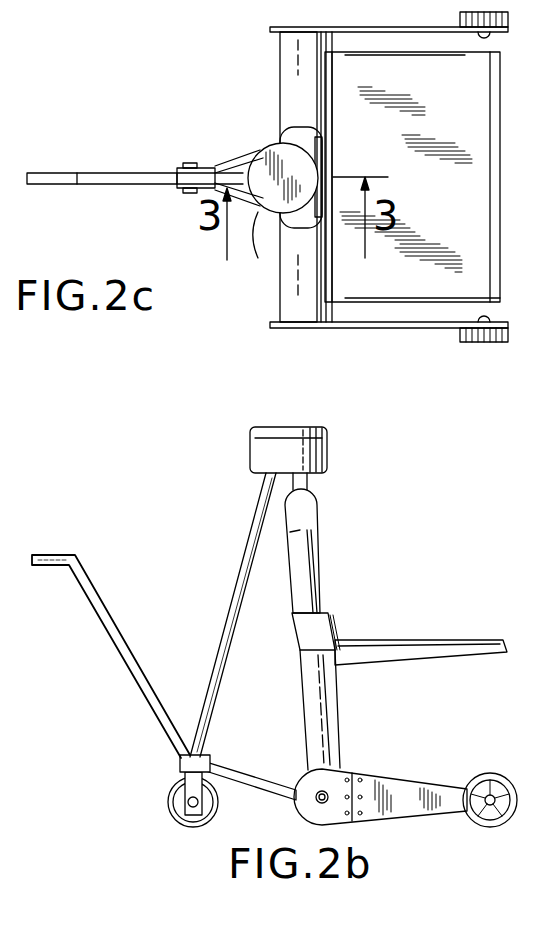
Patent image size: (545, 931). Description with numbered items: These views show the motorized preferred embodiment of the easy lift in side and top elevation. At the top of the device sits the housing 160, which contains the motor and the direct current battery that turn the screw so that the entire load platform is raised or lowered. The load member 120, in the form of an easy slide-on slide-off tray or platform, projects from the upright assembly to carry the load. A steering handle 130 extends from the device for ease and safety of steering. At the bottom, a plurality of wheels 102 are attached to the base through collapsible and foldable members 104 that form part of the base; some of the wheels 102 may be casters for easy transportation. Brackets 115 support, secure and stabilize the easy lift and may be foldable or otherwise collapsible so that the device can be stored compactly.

In FIG. 2C, the wheels 102 is at (470, 342).
In FIG. 2B, the wheels 102 is at (492, 777).
In FIG. 2C, the collapsible and foldable members 104 is at (310, 330).
In FIG. 2B, the collapsible and foldable members 104 is at (380, 770).
In FIG. 2B, the brackets 115 is at (240, 580).
In FIG. 2C, the load member 120 is at (477, 104).
In FIG. 2B, the load member 120 is at (410, 640).
In FIG. 2C, the steering handle 130 is at (100, 185).
In FIG. 2B, the steering handle 130 is at (54, 555).
In FIG. 2C, the housing 160 is at (277, 222).
In FIG. 2B, the housing 160 is at (250, 437).